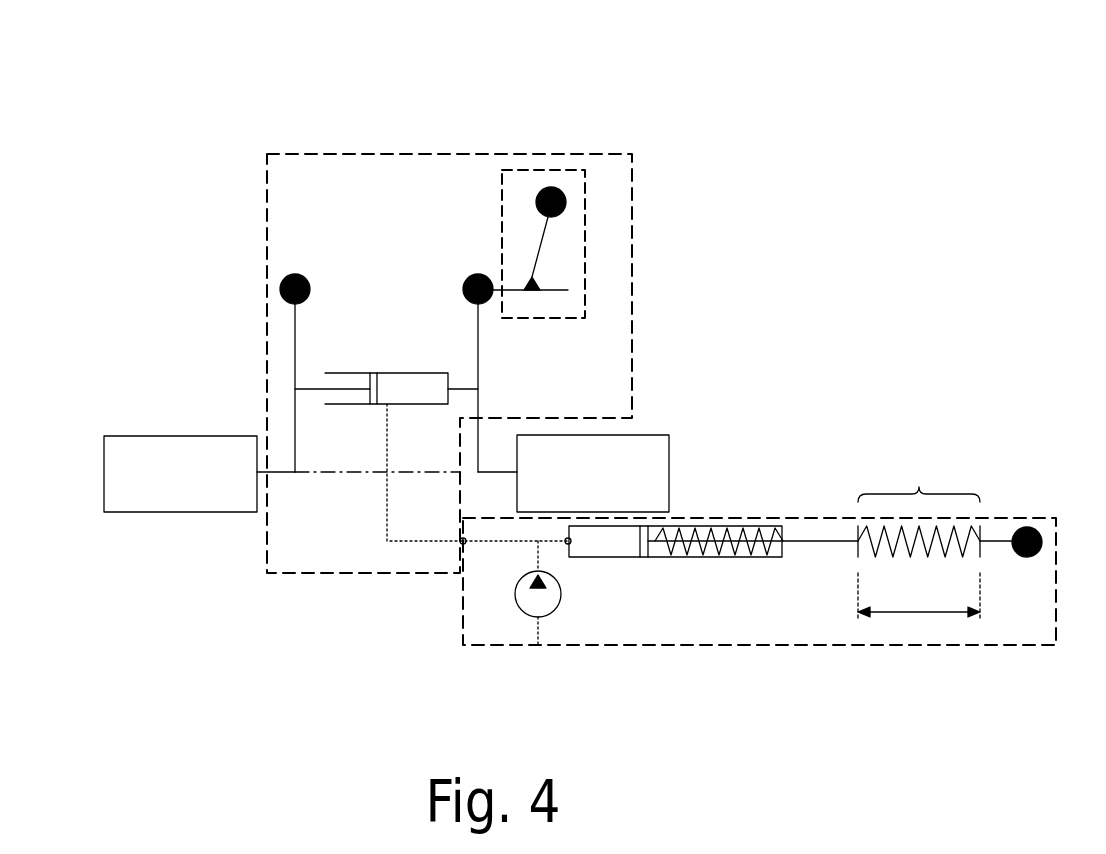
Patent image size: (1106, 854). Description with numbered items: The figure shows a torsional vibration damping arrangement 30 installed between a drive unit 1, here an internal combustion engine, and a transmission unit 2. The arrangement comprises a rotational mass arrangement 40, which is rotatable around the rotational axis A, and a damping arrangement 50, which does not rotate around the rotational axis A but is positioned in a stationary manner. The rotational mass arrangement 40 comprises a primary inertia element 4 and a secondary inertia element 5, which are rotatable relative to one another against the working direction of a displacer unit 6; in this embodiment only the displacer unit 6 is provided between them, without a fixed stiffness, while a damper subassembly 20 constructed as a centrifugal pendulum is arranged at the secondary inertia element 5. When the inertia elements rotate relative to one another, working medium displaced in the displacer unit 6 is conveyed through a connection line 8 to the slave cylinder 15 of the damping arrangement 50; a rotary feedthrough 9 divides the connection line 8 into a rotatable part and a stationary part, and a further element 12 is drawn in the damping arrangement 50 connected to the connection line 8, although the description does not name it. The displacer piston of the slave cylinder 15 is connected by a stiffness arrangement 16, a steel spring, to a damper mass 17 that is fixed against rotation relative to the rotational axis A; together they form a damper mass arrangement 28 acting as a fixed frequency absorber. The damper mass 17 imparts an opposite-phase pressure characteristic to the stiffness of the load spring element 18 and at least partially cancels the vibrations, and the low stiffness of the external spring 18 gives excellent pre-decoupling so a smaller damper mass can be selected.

The drive unit 1 is at (130, 458).
The transmission unit 2 is at (643, 458).
The primary inertia element 4 is at (288, 277).
The secondary inertia element 5 is at (475, 275).
The displacer unit 6 is at (404, 361).
The connection line 8 is at (397, 545).
The rotary feedthrough 9 is at (458, 545).
The pump 12 is at (548, 598).
The slave cylinder 15 is at (727, 580).
The stiffness arrangement 16 is at (919, 487).
The damper mass 17 is at (566, 205).
The load spring element 18 is at (725, 530).
The damper subassembly 20 is at (585, 185).
The damper mass arrangement 28 is at (919, 595).
The torsional vibration damping arrangement 30 is at (750, 158).
The rotational mass arrangement 40 is at (336, 153).
The damping arrangement 50 is at (825, 518).
The rotational axis A is at (345, 480).